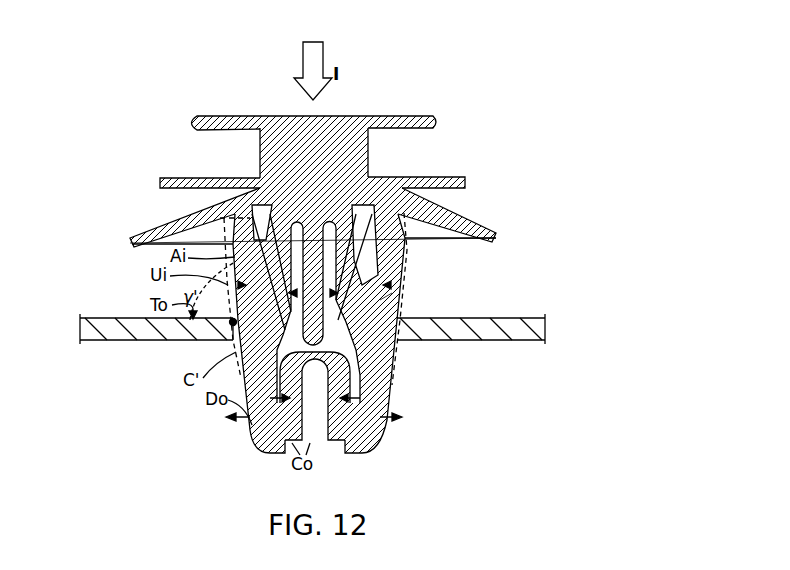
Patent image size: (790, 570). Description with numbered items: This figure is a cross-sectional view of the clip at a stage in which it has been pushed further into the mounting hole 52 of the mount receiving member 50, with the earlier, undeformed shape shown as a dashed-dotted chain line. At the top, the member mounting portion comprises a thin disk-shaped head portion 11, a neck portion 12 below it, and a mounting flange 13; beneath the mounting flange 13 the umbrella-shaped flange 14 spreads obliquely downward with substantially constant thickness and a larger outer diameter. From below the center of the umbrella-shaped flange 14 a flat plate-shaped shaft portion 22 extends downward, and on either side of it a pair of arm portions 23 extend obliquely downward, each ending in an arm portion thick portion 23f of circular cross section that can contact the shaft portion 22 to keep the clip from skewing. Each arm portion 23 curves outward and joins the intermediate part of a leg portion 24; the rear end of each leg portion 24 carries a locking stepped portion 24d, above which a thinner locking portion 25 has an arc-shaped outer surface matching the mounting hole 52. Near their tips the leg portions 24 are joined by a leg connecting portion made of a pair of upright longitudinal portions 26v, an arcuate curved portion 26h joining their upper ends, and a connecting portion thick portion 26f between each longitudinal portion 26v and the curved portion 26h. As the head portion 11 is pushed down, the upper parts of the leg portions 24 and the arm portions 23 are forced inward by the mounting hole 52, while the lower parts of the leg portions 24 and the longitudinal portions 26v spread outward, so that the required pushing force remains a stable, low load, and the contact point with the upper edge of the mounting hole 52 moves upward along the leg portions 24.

The head portion 11 is at (200, 117).
The neck portion 12 is at (370, 156).
The mounting flange 13 is at (445, 177).
The umbrella-shaped flange 14 is at (142, 237).
The shaft portion 22 is at (325, 303).
The arm portion 23 is at (365, 262).
The arm portion thick portion 23f is at (392, 293).
The leg portion 24 is at (402, 342).
The locking stepped portion 24d is at (395, 248).
The locking portion 25 is at (408, 222).
The curved portion 26h is at (352, 360).
The connecting portion thick portion 26f is at (360, 396).
The longitudinal portion 26v is at (388, 400).
The mount receiving member 50 is at (108, 318).
The mounting hole 52 is at (236, 345).